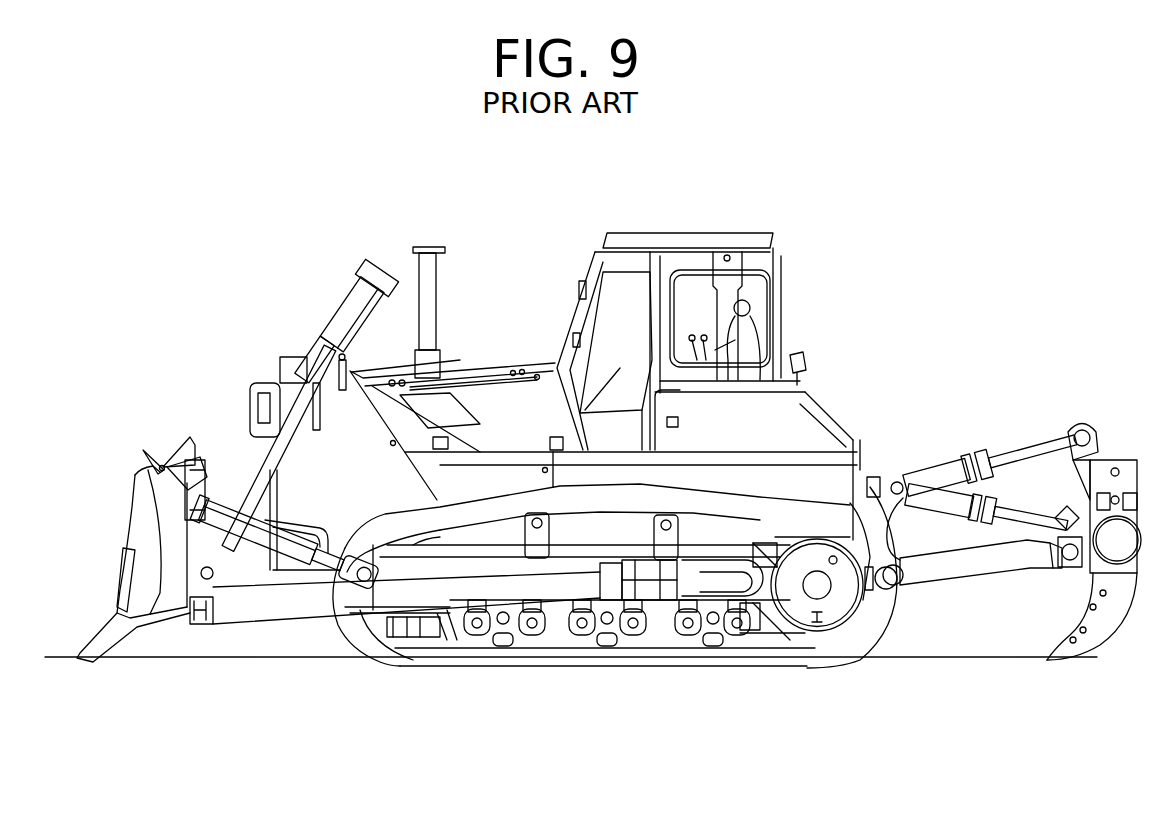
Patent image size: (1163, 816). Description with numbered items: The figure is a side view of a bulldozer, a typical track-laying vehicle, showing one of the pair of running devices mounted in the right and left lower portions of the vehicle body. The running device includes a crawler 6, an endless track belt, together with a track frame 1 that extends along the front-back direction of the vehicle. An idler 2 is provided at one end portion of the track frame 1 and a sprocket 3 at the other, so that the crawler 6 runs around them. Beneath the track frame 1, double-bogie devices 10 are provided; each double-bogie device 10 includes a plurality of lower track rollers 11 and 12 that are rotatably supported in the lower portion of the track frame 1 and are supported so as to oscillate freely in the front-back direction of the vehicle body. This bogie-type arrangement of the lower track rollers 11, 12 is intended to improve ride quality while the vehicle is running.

The track frame 1 is at (742, 545).
The idler 2 is at (367, 657).
The sprocket 3 is at (792, 650).
The crawler 6 is at (875, 650).
The double-bogie device 10 is at (503, 657).
The lower track roller 11 is at (460, 650).
The lower track roller 12 is at (548, 647).